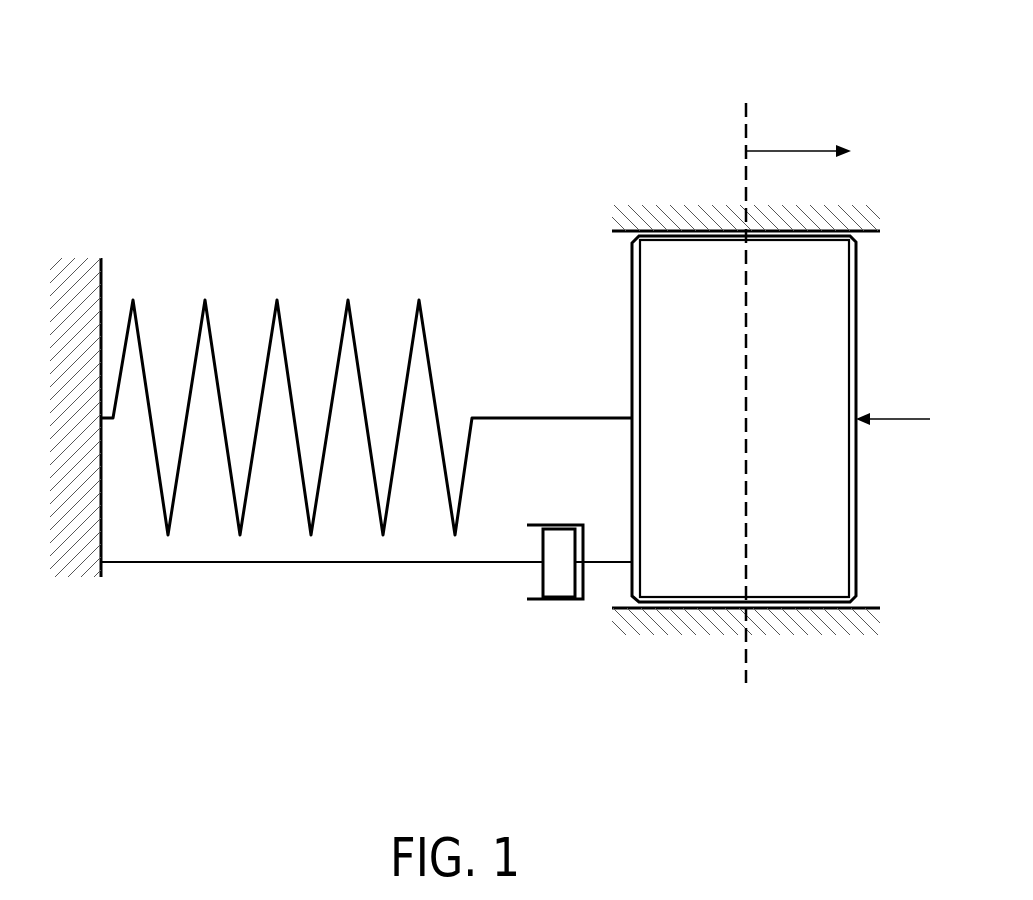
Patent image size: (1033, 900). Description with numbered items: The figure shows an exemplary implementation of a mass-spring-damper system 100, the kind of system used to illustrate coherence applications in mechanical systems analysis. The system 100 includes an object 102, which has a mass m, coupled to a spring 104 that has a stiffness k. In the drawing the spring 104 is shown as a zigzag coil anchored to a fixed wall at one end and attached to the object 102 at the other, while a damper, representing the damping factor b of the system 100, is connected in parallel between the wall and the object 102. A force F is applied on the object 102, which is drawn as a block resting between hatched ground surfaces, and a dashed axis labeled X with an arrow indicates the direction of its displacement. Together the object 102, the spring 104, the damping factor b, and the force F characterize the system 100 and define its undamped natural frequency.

The mass-spring-damper system 100 is at (89, 64).
The object 102 is at (744, 419).
The spring 104 is at (348, 300).